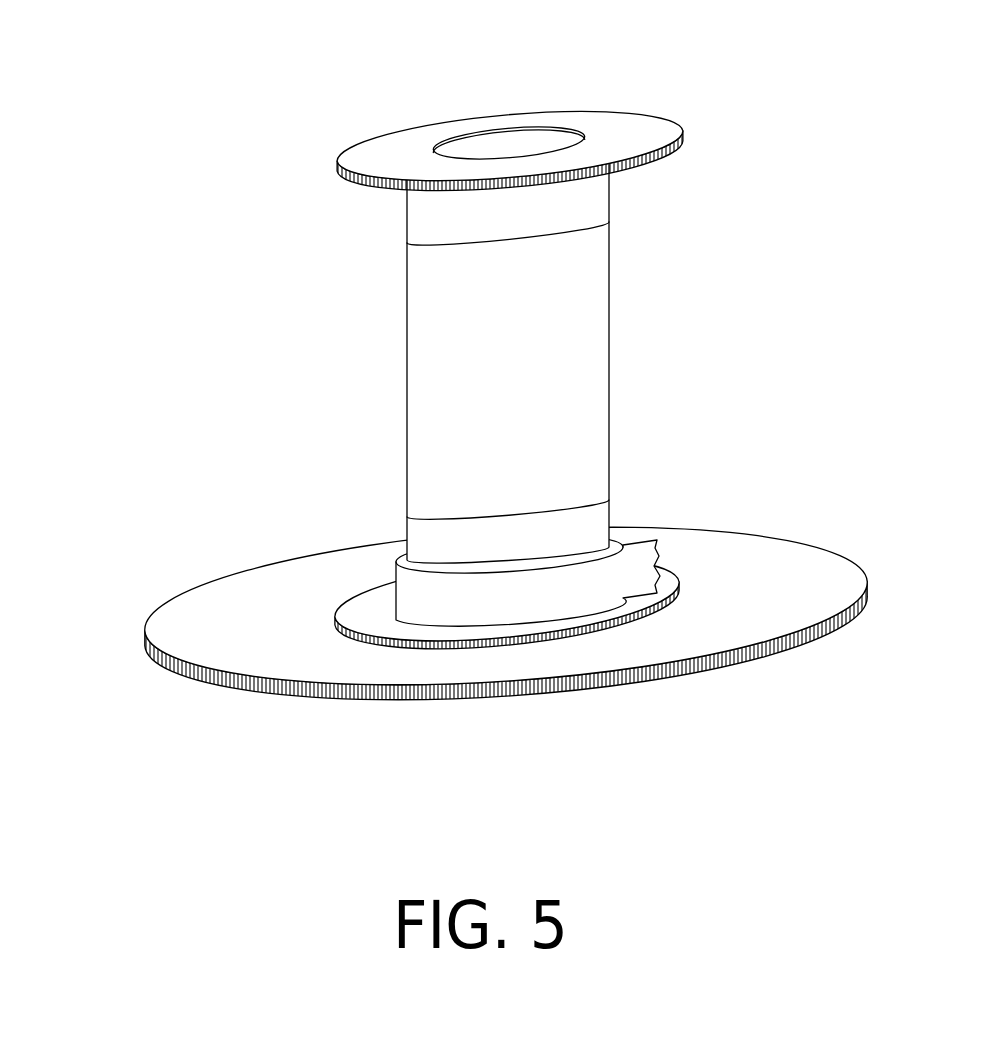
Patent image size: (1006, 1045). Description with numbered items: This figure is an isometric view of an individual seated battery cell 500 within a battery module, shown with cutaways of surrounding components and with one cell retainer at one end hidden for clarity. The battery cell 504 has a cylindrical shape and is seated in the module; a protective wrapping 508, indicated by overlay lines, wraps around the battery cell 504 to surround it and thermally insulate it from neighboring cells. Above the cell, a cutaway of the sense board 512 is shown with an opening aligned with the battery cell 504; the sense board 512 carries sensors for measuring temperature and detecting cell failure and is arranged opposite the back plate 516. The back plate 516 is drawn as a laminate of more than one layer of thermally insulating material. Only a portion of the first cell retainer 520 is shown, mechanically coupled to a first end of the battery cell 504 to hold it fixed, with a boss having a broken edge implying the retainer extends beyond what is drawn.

The seated battery cell 500 is at (569, 416).
The battery cell 504 is at (595, 216).
The protective wrapping 508 is at (595, 350).
The sense board 512 is at (385, 147).
The back plate 516 is at (847, 568).
The first cell retainer 520 is at (400, 578).